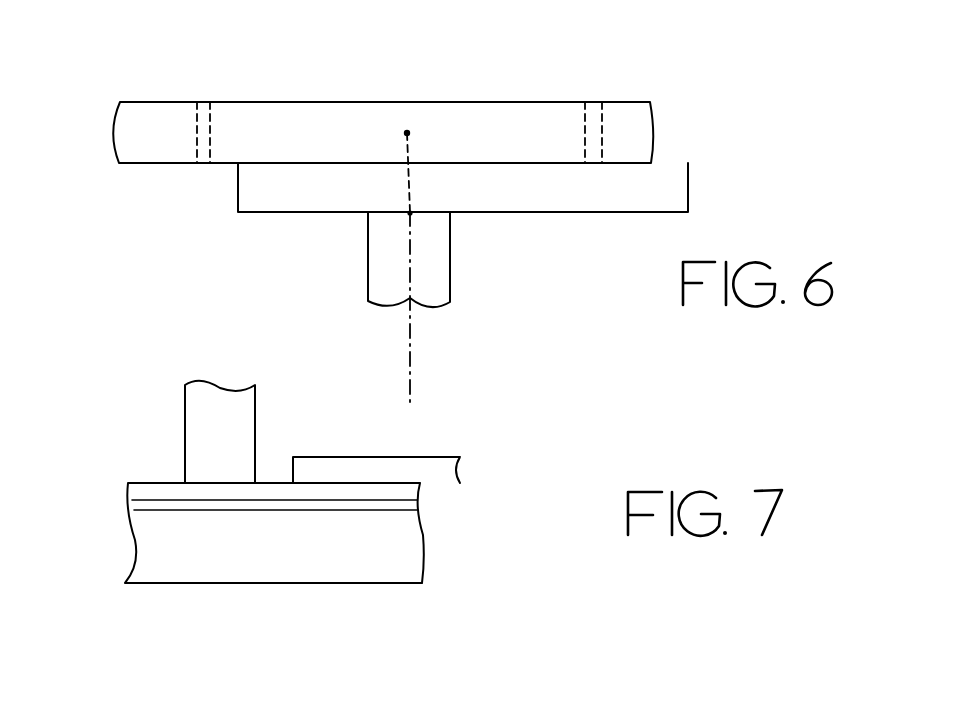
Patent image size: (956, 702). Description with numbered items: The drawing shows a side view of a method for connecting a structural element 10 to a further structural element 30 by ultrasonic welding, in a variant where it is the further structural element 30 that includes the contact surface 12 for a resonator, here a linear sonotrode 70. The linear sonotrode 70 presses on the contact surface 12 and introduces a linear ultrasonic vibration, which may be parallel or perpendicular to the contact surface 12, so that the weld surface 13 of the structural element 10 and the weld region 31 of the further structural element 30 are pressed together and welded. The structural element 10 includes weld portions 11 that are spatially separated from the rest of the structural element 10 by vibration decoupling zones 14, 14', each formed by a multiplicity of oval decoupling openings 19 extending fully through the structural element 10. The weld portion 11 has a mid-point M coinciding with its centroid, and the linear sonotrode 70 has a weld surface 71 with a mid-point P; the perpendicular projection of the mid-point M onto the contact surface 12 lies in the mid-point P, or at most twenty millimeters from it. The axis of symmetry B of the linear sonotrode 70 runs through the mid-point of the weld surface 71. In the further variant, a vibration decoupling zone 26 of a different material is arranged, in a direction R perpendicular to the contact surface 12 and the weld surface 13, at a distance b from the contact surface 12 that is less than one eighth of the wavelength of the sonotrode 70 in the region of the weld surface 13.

In FIG. 6, the structural element 10 is at (650, 130).
In FIG. 7, the structural element 10 is at (418, 560).
In FIG. 6, the weld portion 11 is at (387, 74).
In FIG. 7, the weld portion 11 is at (277, 502).
In FIG. 6, the contact surface 12 is at (390, 213).
In FIG. 7, the contact surface 12 is at (240, 470).
In FIG. 6, the weld surface 13 is at (510, 163).
In FIG. 7, the weld surface 13 is at (322, 480).
In FIG. 6, the vibration decoupling zone 14 is at (180, 61).
In FIG. 6, the vibration decoupling zone 14' is at (633, 64).
In FIG. 6, the decoupling openings 19 is at (200, 157).
In FIG. 7, the vibration decoupling zone 26 is at (420, 500).
In FIG. 6, the further structural element 30 is at (688, 183).
In FIG. 7, the further structural element 30 is at (462, 461).
In FIG. 6, the weld region 31 is at (317, 163).
In FIG. 6, the linear sonotrode 70 is at (445, 271).
In FIG. 7, the linear sonotrode 70 is at (207, 422).
In FIG. 6, the weld surface of the sonotrode 71 is at (390, 212).
In FIG. 7, the weld surface of the sonotrode 71 is at (213, 483).
In FIG. 6, the mid-point M is at (407, 133).
In FIG. 6, the mid-point P is at (412, 214).
In FIG. 6, the axis of symmetry B is at (432, 267).
In FIG. 7, the direction R is at (32, 462).
In FIG. 7, the distance b is at (126, 502).